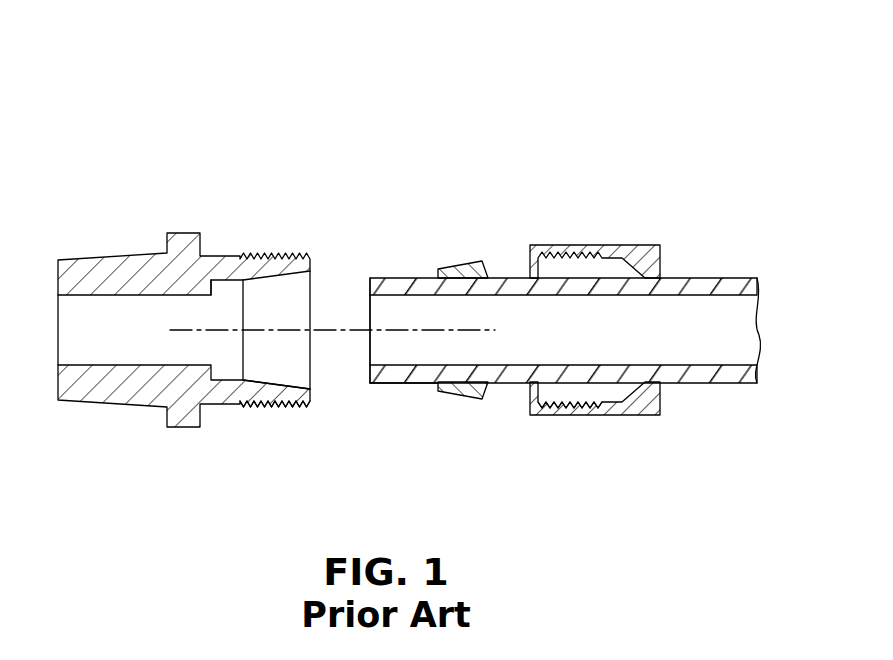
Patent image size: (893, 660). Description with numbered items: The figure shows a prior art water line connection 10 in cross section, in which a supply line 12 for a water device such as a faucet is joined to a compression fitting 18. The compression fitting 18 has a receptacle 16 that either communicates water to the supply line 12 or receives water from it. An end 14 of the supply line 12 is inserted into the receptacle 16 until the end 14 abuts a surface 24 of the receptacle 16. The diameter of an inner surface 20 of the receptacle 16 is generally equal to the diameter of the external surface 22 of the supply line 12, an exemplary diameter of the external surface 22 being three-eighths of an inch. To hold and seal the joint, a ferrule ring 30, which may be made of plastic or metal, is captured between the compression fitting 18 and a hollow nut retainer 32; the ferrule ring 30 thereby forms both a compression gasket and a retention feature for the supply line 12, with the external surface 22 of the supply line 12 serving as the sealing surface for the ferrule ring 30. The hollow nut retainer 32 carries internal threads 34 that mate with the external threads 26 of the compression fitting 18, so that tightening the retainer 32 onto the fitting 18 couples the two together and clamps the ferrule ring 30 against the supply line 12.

The water line connection 10 is at (541, 103).
The supply line 12 is at (727, 277).
The end of supply line 14 is at (358, 280).
The receptacle 16 is at (276, 301).
The compression fitting 18 is at (190, 195).
The inner surface of receptacle 20 is at (236, 378).
The external surface of supply line 22 is at (403, 384).
The surface of receptacle 24 is at (213, 287).
The external threads 26 is at (271, 406).
The ferrule ring 30 is at (473, 253).
The hollow nut retainer 32 is at (615, 233).
The internal threads 34 is at (561, 406).